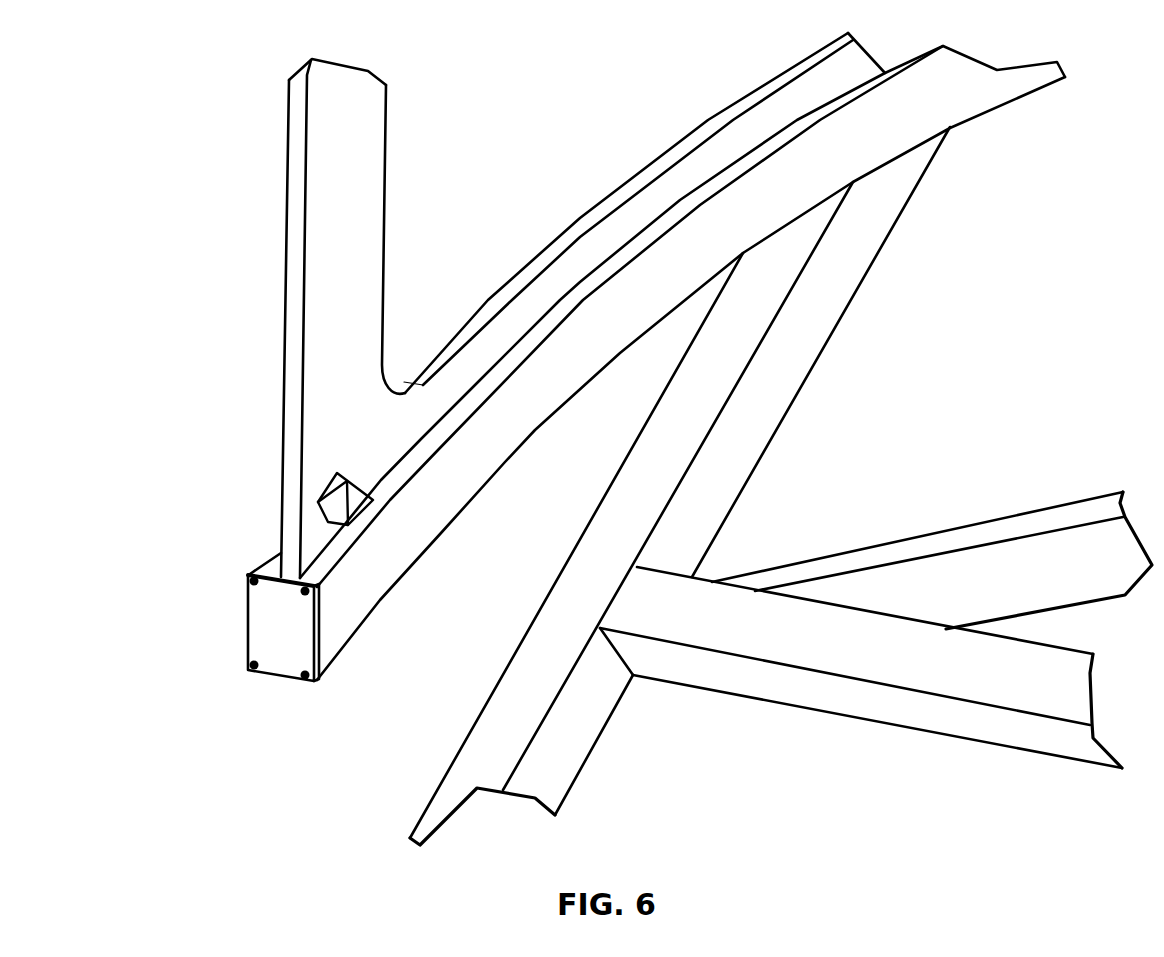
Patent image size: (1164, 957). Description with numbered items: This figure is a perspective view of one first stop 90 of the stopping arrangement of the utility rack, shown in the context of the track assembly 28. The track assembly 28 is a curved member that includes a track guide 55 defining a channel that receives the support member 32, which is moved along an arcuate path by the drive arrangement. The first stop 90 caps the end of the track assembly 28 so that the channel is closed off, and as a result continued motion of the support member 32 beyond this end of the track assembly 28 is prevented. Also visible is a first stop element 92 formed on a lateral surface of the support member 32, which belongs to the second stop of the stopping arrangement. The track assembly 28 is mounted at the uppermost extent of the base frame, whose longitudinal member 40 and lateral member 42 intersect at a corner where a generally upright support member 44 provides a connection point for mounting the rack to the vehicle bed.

The support member 32 is at (290, 229).
The first stop element 92 is at (340, 493).
The first stop 90 is at (258, 626).
The track assembly 28 is at (355, 602).
The track guide 55 is at (492, 450).
The upright support member 44 is at (552, 648).
The lateral member 42 is at (945, 540).
The longitudinal member 40 is at (918, 713).